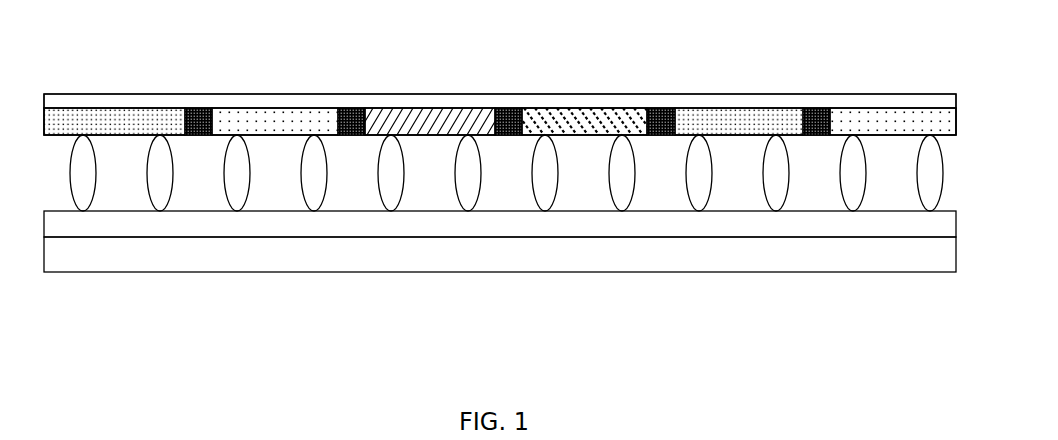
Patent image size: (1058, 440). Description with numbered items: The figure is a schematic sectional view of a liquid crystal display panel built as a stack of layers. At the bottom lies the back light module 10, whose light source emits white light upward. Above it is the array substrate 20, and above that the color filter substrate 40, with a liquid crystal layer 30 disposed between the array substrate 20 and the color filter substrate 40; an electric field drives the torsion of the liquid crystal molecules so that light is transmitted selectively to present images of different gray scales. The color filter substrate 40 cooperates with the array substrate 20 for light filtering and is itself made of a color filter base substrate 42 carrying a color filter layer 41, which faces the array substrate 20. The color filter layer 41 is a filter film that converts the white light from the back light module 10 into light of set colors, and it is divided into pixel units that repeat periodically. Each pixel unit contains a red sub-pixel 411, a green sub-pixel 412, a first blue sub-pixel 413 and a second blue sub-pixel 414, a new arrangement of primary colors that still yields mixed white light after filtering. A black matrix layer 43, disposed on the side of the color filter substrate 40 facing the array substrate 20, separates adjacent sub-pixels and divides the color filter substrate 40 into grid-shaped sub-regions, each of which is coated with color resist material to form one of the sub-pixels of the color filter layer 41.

The back light module 10 is at (173, 257).
The array substrate 20 is at (328, 227).
The liquid crystal layer 30 is at (472, 197).
The color filter substrate 40 is at (500, 72).
The color filter layer 41 is at (500, 77).
The red sub-pixel 411 is at (155, 110).
The color filter base substrate 42 is at (217, 98).
The green sub-pixel 412 is at (278, 110).
The black matrix layer 43 is at (355, 110).
The first blue sub-pixel 413 is at (447, 110).
The second blue sub-pixel 414 is at (577, 110).